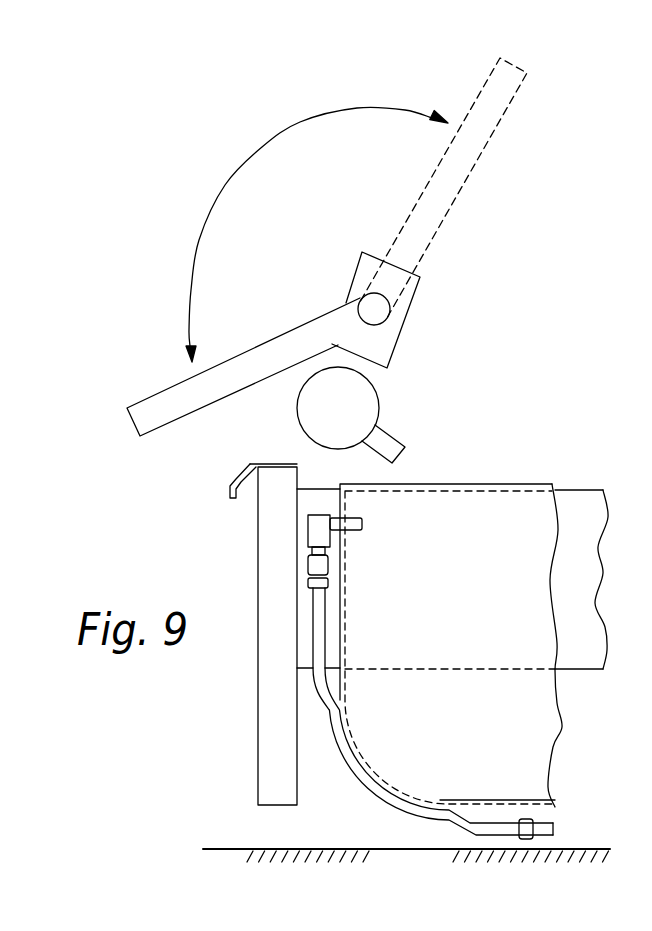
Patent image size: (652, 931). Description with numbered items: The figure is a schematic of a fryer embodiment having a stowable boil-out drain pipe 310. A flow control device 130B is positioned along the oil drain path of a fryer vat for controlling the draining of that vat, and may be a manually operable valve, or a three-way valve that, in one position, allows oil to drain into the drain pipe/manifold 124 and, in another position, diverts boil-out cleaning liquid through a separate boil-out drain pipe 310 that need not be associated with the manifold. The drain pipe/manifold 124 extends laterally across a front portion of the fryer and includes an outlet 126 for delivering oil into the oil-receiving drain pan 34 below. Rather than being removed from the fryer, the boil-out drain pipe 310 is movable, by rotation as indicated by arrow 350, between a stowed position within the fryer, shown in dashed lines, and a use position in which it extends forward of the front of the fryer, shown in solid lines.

The arrow 350 is at (262, 147).
The boil-out drain pipe 310 is at (245, 368).
The flow control device 130B is at (393, 338).
The drain pipe/manifold 124 is at (358, 405).
The outlet 126 is at (387, 438).
The pan 34 is at (345, 611).